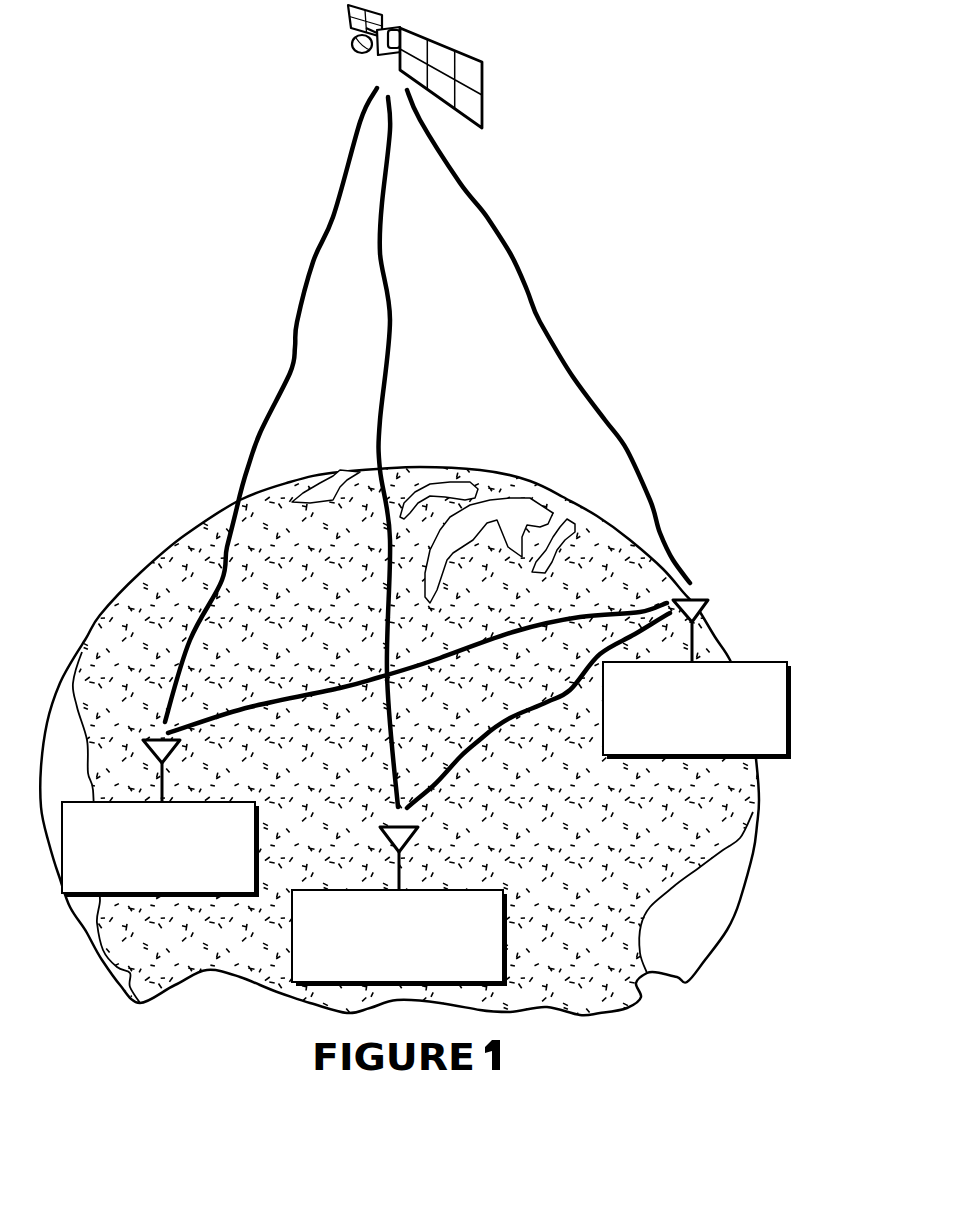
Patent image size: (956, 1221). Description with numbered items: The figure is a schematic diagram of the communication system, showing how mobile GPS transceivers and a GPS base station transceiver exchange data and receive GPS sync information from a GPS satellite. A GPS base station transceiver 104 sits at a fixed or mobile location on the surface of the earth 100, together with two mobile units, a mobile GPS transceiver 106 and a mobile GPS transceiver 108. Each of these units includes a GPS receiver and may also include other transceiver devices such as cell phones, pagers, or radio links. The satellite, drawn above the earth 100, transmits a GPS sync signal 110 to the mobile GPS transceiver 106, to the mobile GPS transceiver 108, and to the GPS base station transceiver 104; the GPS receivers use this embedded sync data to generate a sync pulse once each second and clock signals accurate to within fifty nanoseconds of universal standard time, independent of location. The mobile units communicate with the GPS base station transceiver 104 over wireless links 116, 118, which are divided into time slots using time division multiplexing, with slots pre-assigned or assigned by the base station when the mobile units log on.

The earth 100 is at (195, 537).
The GPS base station transceiver 104 is at (690, 758).
The mobile GPS transceiver 106 is at (183, 895).
The mobile GPS transceiver 108 is at (510, 930).
The GPS sync signal 110 is at (427, 406).
The wireless link 116 is at (538, 626).
The wireless link 118 is at (514, 719).